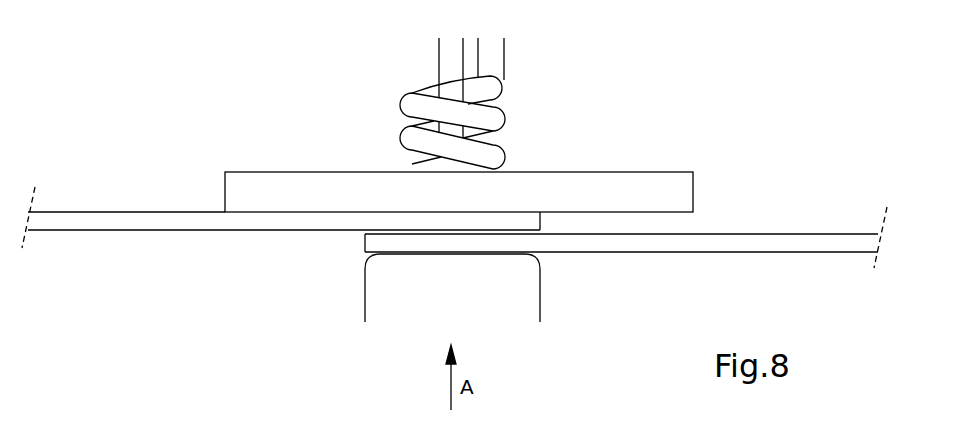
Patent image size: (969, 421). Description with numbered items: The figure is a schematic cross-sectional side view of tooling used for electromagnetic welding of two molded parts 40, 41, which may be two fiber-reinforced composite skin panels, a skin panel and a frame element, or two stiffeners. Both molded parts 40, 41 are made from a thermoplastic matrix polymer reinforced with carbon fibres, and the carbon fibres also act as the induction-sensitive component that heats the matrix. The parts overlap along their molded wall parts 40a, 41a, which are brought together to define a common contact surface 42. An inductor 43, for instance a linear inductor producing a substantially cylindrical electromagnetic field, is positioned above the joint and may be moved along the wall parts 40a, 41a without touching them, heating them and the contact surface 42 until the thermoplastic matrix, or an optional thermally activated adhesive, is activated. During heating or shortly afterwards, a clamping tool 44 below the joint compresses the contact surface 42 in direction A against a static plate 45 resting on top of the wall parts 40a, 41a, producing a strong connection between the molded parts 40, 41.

The molded part 40 is at (284, 164).
The molded wall part 40a is at (382, 221).
The molded part 41 is at (575, 193).
The molded wall part 41a is at (418, 246).
The common contact surface 42 is at (368, 235).
The inductor 43 is at (521, 85).
The clamping tool 44 is at (375, 304).
The static plate 45 is at (608, 182).